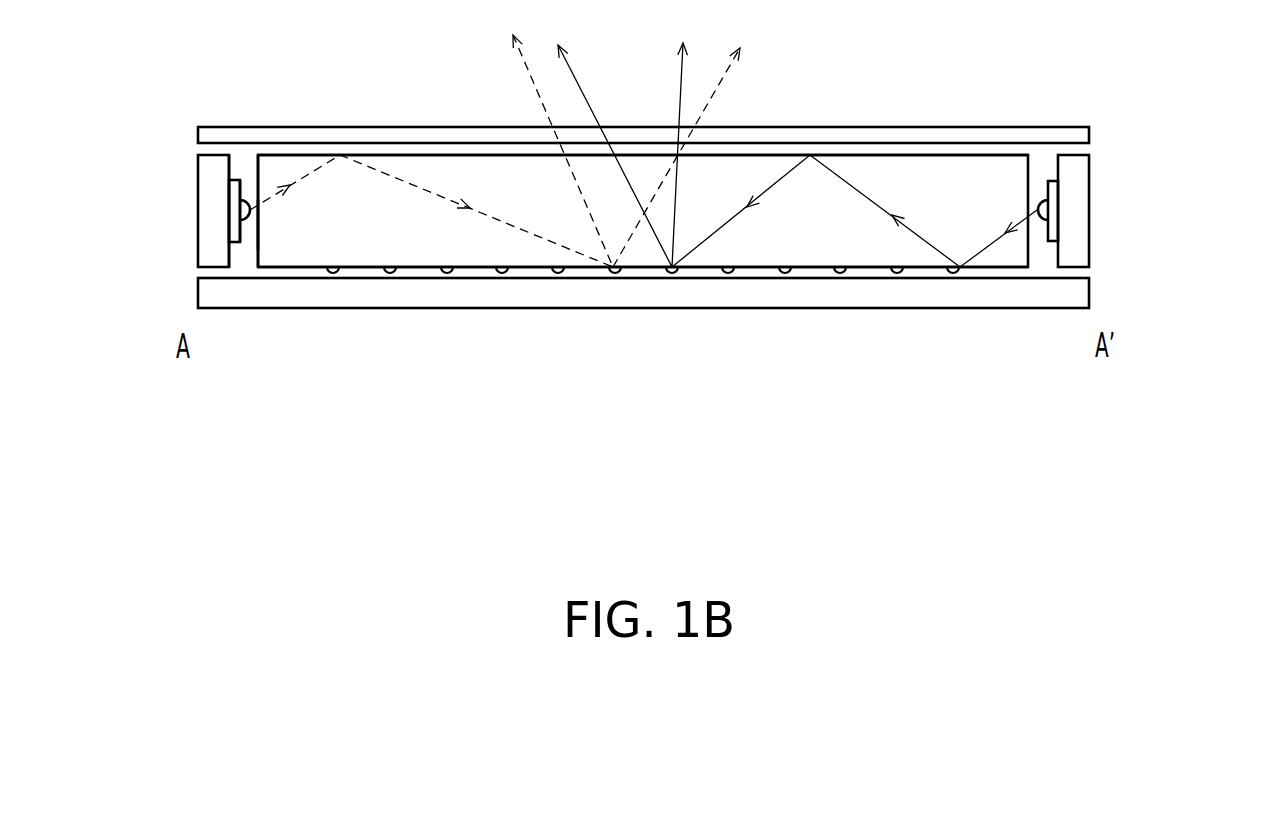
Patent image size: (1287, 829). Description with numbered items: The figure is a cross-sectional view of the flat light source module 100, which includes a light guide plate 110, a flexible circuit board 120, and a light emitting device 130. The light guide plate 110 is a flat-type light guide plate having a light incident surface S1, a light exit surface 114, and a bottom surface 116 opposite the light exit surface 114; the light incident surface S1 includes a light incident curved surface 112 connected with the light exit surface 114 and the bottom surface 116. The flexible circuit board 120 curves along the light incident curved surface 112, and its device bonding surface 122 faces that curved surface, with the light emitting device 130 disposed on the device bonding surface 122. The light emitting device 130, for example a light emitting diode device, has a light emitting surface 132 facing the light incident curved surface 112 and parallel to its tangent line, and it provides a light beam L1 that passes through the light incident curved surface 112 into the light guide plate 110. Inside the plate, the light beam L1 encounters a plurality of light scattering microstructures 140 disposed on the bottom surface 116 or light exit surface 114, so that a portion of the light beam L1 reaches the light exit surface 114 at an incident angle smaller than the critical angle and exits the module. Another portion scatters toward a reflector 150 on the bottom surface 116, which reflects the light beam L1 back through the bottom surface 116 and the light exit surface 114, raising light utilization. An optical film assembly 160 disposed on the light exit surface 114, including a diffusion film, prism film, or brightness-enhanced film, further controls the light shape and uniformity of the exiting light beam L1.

The flat light source module 100 is at (1110, 436).
The light guide plate 110 is at (472, 238).
The light incident curved surface 112 is at (257, 257).
The light exit surface 114 is at (450, 155).
The bottom surface 116 is at (418, 269).
The flexible circuit board 120 is at (213, 192).
The device bonding surface 122 is at (231, 165).
The light emitting device 130 is at (235, 222).
The light emitting surface 132 is at (243, 190).
The light scattering microstructures 140 is at (333, 273).
The reflector 150 is at (1067, 292).
The optical film assembly 160 is at (1073, 135).
The light incident surface S1 is at (257, 236).
The light beam L1 is at (318, 152).